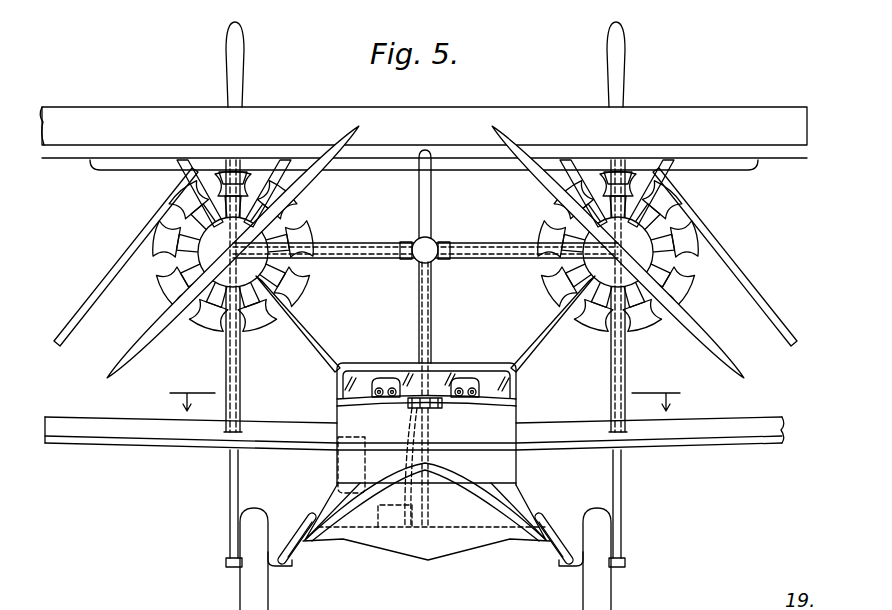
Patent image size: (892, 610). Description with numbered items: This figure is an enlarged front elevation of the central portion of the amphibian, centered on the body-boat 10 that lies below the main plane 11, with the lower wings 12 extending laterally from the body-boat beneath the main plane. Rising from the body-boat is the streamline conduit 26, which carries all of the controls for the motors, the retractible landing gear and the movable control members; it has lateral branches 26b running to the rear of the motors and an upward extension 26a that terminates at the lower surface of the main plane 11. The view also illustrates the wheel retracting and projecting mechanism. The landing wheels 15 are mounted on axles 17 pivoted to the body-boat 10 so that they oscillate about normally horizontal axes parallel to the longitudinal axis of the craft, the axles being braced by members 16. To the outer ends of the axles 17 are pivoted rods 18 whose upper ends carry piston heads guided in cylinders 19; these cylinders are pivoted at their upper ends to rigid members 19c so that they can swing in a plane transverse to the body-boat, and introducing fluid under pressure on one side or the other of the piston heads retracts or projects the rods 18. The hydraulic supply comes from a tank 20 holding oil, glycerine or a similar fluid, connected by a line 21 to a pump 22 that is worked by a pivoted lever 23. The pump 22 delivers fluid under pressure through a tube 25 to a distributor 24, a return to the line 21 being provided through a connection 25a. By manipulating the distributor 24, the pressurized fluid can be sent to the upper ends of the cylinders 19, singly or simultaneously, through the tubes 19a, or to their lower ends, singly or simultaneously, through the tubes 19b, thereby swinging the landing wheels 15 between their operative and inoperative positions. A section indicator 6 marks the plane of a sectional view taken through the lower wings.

The section line of FIG. 6 is at (425, 406).
The body-boat 10 is at (384, 547).
The main plane 11 is at (110, 112).
The lower wings 12 is at (92, 402).
The landing wheels 15 is at (262, 603).
The bracing members 16 is at (289, 556).
The axles 17 is at (228, 567).
The rods 18 is at (229, 508).
The cylinders 19 is at (241, 383).
The tubes 19a is at (338, 243).
The tubes 19b is at (355, 258).
The rigid members 19c is at (237, 170).
The tank 20 is at (338, 468).
The line 21 is at (328, 497).
The pump 22 is at (400, 522).
The pivoted lever 23 is at (408, 500).
The distributor 24 is at (446, 408).
The tube 25 is at (411, 433).
The connection 25a is at (432, 458).
The streamline conduit 26 is at (418, 295).
The upward extension 26a is at (430, 204).
The lateral branches 26b is at (391, 242).